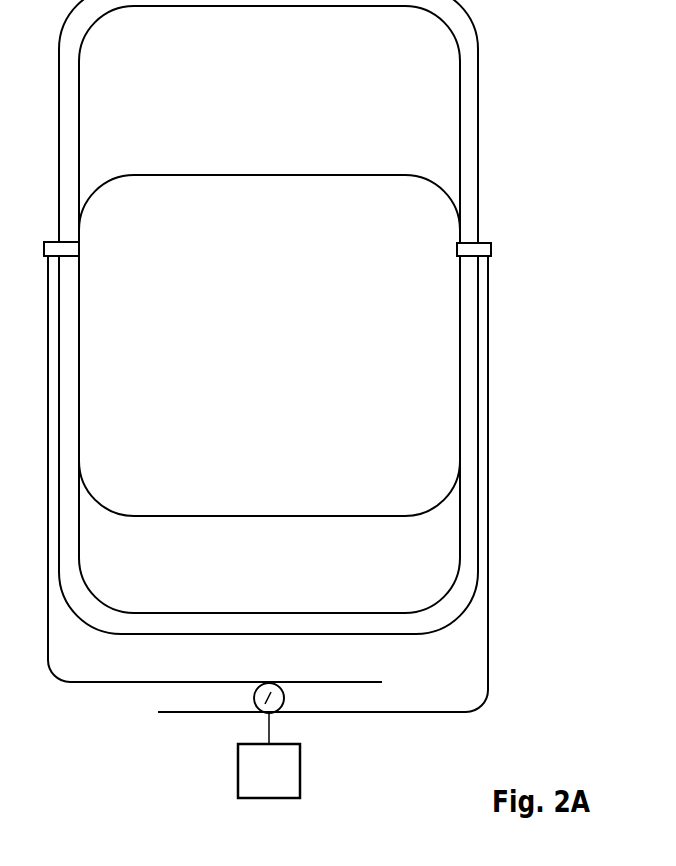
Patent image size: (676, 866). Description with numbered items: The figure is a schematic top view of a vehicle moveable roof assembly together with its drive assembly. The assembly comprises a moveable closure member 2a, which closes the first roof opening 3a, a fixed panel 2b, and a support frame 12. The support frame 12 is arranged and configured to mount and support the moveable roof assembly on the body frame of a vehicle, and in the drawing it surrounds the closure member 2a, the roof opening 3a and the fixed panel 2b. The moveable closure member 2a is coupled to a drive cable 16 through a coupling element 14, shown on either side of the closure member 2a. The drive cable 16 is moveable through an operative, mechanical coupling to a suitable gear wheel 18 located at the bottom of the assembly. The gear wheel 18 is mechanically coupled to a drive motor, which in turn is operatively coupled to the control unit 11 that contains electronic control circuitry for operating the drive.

The moveable closure member 2a is at (243, 371).
The fixed panel 2b is at (245, 576).
The first roof opening 3a is at (253, 101).
The control unit 11 is at (258, 783).
The support frame 12 is at (468, 135).
The coupling element 14 is at (470, 252).
The drive cable 16 is at (488, 352).
The gear wheel 18 is at (262, 713).